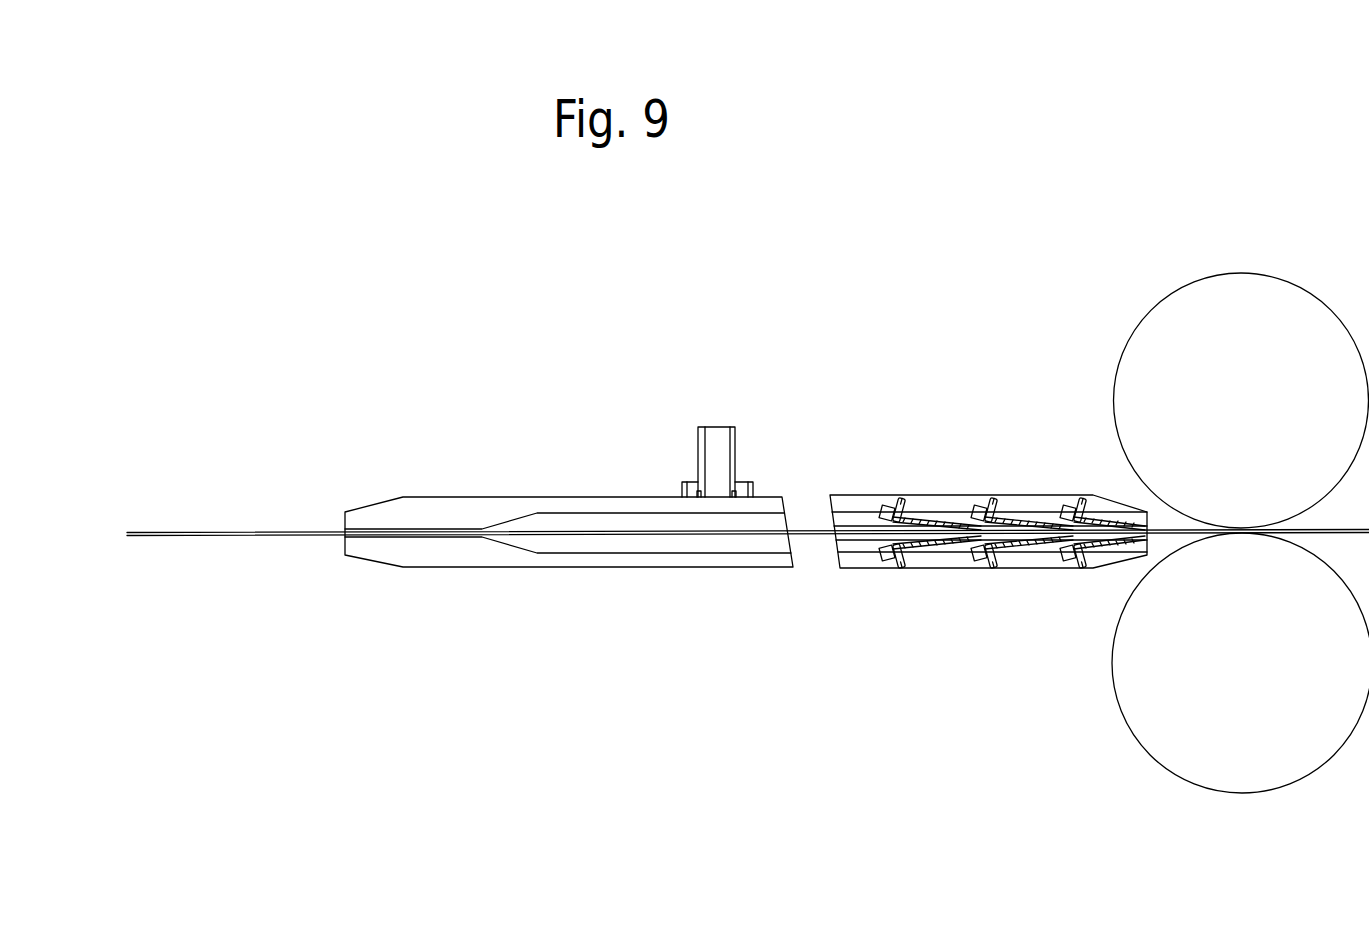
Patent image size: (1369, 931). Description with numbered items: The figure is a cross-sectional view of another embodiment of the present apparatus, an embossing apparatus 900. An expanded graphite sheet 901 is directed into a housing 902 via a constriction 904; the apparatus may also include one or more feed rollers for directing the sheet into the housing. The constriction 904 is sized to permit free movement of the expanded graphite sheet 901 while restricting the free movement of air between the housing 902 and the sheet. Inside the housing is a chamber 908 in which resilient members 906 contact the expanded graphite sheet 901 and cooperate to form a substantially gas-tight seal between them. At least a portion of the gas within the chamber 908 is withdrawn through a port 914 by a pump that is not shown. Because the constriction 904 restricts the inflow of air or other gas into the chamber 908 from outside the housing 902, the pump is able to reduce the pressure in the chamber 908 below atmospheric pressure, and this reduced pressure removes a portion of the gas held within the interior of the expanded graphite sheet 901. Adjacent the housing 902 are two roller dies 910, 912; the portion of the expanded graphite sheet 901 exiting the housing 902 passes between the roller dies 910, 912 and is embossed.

The embossing apparatus 900 is at (548, 289).
The expanded graphite sheet 901 is at (160, 533).
The housing 902 is at (672, 570).
The constriction 904 is at (408, 537).
The resilient members 906 is at (1088, 508).
The chamber 908 is at (672, 522).
The roller die 910 is at (1125, 340).
The roller die 912 is at (1130, 727).
The port 914 is at (715, 428).